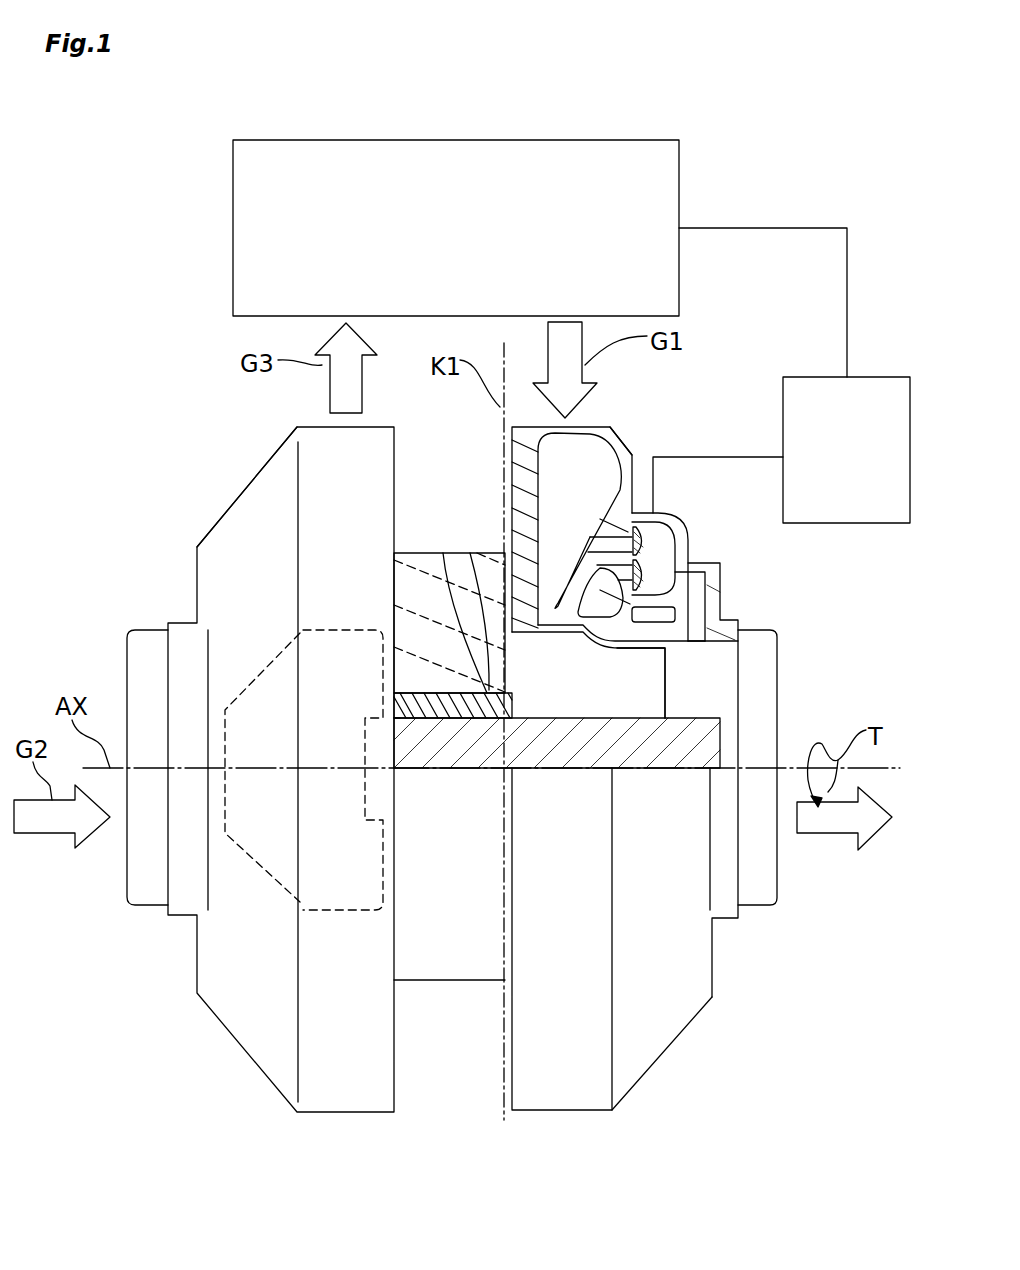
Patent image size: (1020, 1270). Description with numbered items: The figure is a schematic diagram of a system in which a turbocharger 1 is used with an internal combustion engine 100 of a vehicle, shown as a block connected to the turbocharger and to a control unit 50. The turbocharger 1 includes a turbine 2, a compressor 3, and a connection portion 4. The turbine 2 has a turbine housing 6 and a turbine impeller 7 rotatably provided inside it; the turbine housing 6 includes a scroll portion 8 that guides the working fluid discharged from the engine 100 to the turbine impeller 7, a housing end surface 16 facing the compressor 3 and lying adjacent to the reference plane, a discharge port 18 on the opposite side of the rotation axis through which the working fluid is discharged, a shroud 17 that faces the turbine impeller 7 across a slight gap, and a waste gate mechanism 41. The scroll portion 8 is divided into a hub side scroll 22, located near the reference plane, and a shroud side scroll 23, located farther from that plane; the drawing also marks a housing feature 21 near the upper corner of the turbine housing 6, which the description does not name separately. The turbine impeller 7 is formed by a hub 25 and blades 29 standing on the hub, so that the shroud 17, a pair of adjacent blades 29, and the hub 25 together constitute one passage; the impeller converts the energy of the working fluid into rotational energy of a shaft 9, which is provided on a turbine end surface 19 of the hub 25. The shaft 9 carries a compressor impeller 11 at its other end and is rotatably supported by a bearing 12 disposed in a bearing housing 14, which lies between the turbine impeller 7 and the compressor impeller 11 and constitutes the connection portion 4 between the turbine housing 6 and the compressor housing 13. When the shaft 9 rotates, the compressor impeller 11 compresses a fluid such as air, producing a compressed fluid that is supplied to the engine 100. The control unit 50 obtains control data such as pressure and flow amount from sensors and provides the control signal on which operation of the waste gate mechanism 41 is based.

The turbocharger 1 is at (170, 378).
The turbine 2 is at (627, 541).
The compressor 3 is at (263, 452).
The connection portion 4 is at (416, 1024).
The turbine housing 6 is at (733, 620).
The turbine impeller 7 is at (720, 747).
The scroll portion 8 is at (680, 529).
The shaft 9 is at (443, 693).
The compressor impeller 11 is at (263, 670).
The bearing 12 is at (443, 553).
The compressor housing 13 is at (232, 503).
The bearing housing 14 is at (478, 983).
The housing end surface 16 is at (510, 482).
The shroud 17 is at (672, 650).
The discharge port 18 is at (742, 663).
The turbine end surface 19 is at (470, 553).
The inclined portion 21 is at (628, 445).
The hub side scroll 22 is at (614, 490).
The shroud side scroll 23 is at (600, 614).
The hub 25 is at (594, 763).
The blade 29 is at (614, 688).
The waste gate mechanism 41 is at (692, 528).
The control unit 50 is at (866, 377).
The internal combustion engine 100 is at (483, 140).